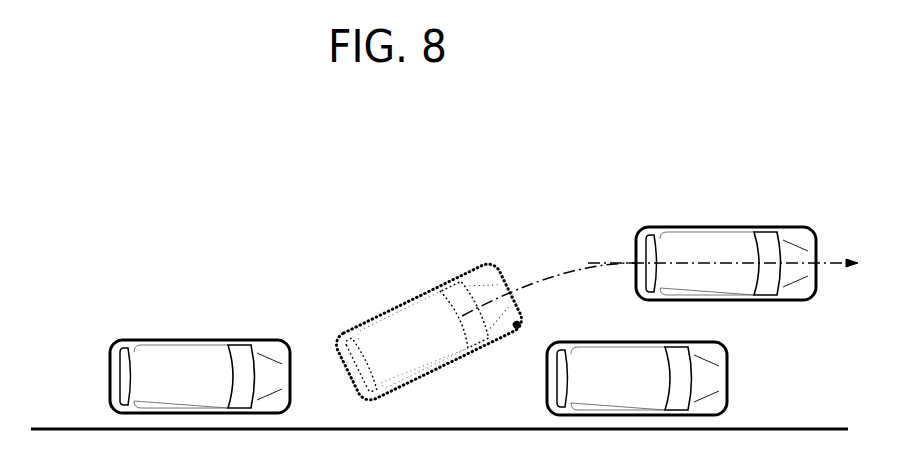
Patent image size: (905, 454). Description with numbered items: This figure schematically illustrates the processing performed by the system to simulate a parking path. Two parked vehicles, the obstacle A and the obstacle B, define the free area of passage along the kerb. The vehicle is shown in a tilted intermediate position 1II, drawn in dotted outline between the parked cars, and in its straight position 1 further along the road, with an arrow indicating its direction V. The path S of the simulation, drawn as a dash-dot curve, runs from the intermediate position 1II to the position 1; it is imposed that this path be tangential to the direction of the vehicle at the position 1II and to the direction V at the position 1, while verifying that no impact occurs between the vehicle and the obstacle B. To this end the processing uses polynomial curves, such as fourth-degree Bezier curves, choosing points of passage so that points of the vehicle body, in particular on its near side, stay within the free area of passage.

The position of the vehicle 1 is at (726, 263).
The position of the vehicle 1II is at (429, 332).
The obstacle A is at (200, 376).
The obstacle B is at (637, 378).
The direction of the vehicle V is at (603, 262).
The path of the simulation S is at (570, 272).